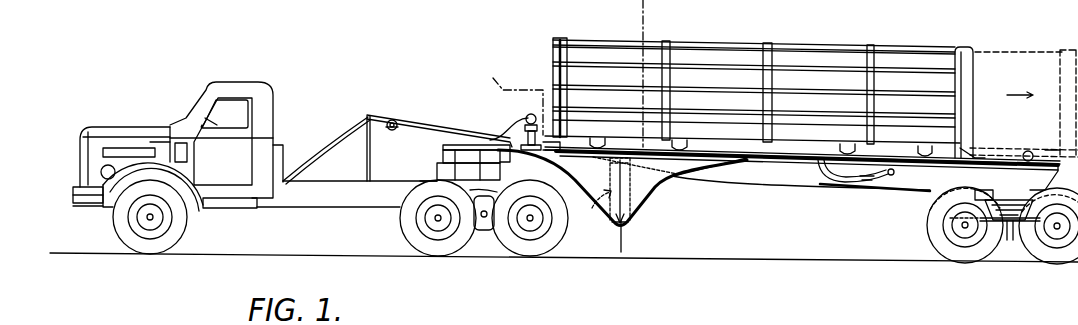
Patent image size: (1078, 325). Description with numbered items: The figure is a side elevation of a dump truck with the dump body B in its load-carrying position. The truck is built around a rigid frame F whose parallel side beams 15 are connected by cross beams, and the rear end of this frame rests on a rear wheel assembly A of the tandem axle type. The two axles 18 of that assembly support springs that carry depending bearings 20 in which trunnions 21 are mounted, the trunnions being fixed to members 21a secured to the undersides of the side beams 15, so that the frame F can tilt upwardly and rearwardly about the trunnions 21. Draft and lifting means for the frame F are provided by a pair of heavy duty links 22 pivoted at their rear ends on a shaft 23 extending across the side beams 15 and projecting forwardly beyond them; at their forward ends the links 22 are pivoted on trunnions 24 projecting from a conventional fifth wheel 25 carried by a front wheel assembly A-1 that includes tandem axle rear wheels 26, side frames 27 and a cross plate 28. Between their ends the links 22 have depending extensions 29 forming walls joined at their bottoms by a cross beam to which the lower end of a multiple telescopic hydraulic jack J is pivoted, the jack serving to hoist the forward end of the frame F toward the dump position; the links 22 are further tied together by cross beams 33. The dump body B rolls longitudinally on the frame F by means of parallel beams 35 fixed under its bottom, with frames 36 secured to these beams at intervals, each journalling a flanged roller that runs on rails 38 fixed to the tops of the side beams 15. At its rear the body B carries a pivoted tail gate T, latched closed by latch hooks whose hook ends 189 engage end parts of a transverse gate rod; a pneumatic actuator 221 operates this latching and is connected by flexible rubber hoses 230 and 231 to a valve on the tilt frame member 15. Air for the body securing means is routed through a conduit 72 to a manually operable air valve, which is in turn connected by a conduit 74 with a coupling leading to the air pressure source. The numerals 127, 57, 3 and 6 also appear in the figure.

The front wheel assembly A-1 is at (396, 234).
The side frames 27 is at (320, 200).
The cross plate 28 is at (453, 173).
The fifth wheel 25 is at (440, 150).
The tandem axle rear wheels 26 is at (423, 247).
The trunnions 24 is at (480, 152).
The conduit 72 is at (393, 121).
The conduit 74 is at (386, 80).
The cable ring 127 is at (389, 86).
The release handle 57 is at (535, 113).
The section line 3 is at (512, 88).
The cross beams 33 is at (610, 158).
The links 22 is at (656, 184).
The shaft 23 is at (747, 161).
The frame F is at (747, 186).
The hydraulic jack J is at (605, 197).
The depending extensions 29 is at (615, 224).
The section line 6 is at (645, 6).
The dump body B is at (836, 43).
The tail gate T is at (975, 115).
The parallel beams 35 is at (782, 138).
The frames 36 is at (688, 134).
The hook end 189 is at (972, 151).
The rails 38 is at (1050, 153).
The pneumatic actuator 221 is at (823, 183).
The rubber hose 230 is at (867, 176).
The rubber hose 231 is at (849, 220).
The side beams 15 is at (907, 184).
The rear wheel assembly A is at (927, 238).
The members 21a is at (980, 192).
The depending bearings 20 is at (1010, 232).
The trunnions 21 is at (1007, 217).
The axles 18 is at (963, 230).